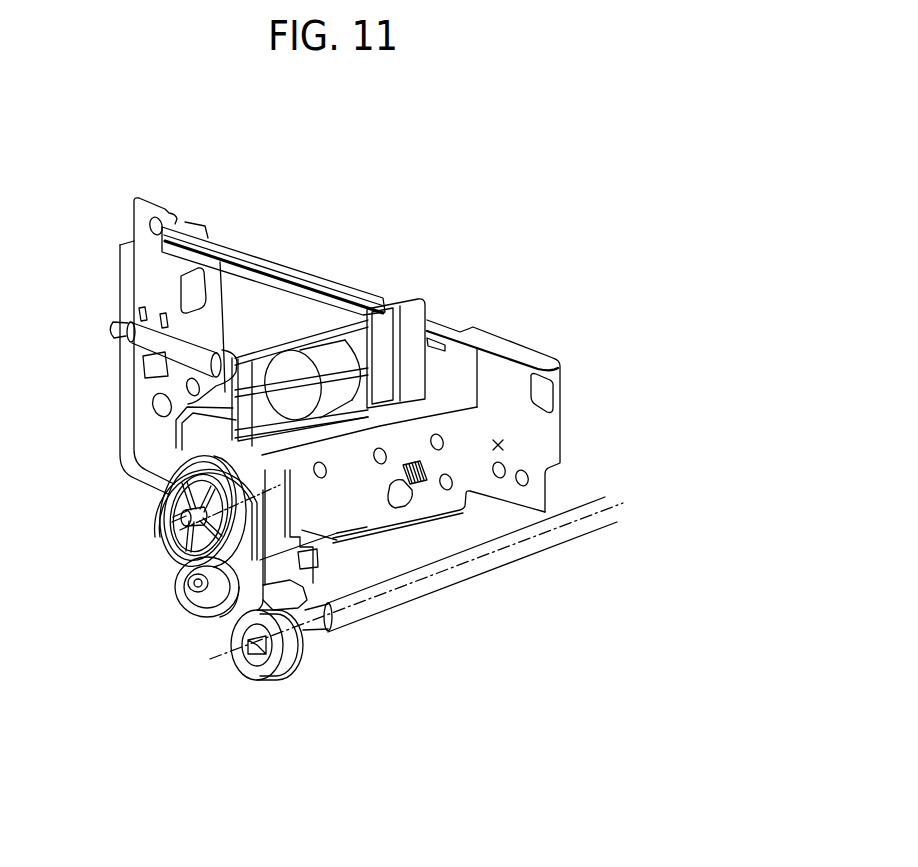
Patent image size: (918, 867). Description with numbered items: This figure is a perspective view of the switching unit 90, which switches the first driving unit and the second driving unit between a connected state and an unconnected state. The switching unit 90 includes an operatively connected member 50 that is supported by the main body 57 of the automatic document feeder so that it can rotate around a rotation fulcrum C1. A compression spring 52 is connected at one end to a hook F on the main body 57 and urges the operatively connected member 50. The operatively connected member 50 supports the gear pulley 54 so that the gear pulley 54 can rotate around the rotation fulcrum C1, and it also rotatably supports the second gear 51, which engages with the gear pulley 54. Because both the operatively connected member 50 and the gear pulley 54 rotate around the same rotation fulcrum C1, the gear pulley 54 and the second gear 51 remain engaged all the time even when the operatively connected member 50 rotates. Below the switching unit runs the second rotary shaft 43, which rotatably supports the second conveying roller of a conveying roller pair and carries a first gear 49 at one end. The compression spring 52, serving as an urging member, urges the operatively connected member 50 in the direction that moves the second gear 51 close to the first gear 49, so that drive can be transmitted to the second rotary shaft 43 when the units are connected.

The switching unit 90 is at (251, 316).
The operatively connected member 50 is at (291, 382).
The main body 57 is at (492, 362).
The hook F is at (120, 330).
The compression spring 52 is at (172, 348).
The gear pulley 54 is at (163, 497).
The rotation fulcrum C1 is at (178, 530).
The second gear 51 is at (187, 585).
The second rotary shaft 43 is at (432, 590).
The first gear 49 is at (272, 672).